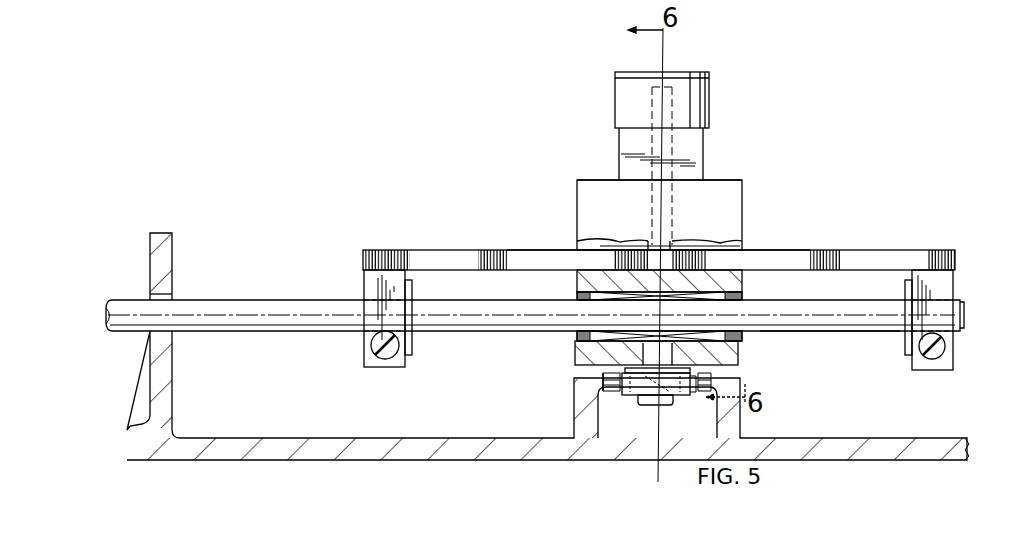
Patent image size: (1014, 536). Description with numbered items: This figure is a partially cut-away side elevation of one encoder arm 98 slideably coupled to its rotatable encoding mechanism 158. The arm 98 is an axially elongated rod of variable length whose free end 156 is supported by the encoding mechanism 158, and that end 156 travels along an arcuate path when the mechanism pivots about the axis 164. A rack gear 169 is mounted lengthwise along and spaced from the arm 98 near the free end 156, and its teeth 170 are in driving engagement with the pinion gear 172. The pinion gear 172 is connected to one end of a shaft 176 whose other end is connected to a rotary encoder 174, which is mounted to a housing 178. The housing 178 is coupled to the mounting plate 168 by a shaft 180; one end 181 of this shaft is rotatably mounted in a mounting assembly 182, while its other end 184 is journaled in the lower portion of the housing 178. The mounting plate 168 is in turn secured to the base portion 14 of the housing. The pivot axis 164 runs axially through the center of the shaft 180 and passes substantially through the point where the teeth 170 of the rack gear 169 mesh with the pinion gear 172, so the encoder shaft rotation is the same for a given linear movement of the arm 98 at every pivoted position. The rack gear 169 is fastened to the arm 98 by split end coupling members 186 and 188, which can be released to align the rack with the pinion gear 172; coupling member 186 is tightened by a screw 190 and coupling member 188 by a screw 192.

The base portion 14 is at (482, 438).
The encoder arm 98 is at (234, 298).
The free end 156 is at (853, 338).
The rotatable encoding mechanism 158 is at (780, 174).
The pivot axis 164 is at (658, 64).
The mounting plate 168 is at (712, 380).
The rack gear 169 is at (877, 250).
The teeth 170 is at (832, 250).
The pinion gear 172 is at (672, 265).
The rotary encoder 174 is at (709, 92).
The shaft 176 is at (650, 186).
The housing 178 is at (720, 178).
The shaft 180 is at (630, 393).
The end 181 is at (660, 405).
The mounting assembly 182 is at (680, 394).
The other end 184 is at (577, 352).
The end coupling member 186 is at (942, 290).
The end coupling member 188 is at (372, 283).
The screw 190 is at (945, 344).
The screw 192 is at (396, 352).